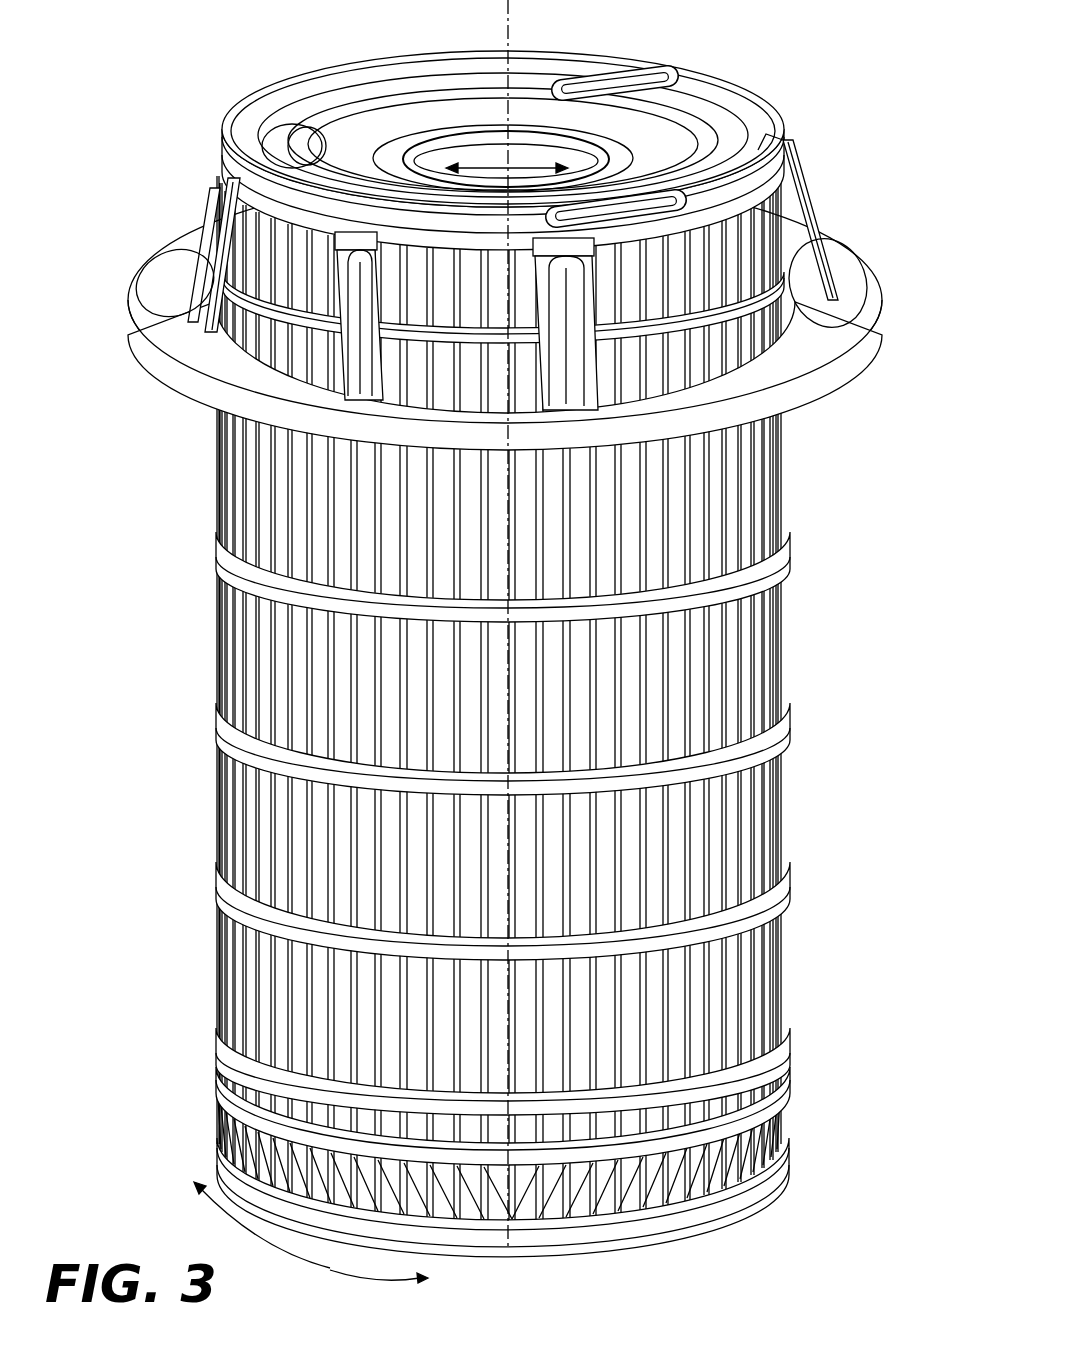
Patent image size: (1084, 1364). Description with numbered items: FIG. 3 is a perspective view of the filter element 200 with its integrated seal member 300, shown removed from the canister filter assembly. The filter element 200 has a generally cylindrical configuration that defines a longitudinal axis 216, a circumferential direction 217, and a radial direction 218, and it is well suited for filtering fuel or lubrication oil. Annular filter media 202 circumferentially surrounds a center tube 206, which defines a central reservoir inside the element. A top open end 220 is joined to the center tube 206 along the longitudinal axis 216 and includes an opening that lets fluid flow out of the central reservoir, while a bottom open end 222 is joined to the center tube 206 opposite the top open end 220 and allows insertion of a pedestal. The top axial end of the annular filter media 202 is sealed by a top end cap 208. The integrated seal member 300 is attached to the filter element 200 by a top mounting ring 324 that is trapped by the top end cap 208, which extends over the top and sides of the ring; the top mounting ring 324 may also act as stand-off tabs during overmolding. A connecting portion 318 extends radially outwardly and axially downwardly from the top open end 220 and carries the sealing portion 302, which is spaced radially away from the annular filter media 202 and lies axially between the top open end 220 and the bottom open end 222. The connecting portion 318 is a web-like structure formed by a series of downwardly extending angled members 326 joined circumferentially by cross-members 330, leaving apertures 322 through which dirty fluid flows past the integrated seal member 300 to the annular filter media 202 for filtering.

The filter element 200 is at (516, 647).
The annular filter media 202 is at (503, 735).
The center tube 206 is at (573, 165).
The top end cap 208 is at (742, 112).
The longitudinal axis 216 is at (508, 14).
The circumferential direction 217 is at (333, 1272).
The radial direction 218 is at (473, 162).
The top open end 220 is at (516, 150).
The bottom open end 222 is at (655, 1250).
The integrated seal member 300 is at (516, 277).
The sealing portion 302 is at (845, 396).
The connecting portion 318 is at (817, 178).
The apertures 322 is at (683, 290).
The top mounting ring 324 is at (283, 130).
The downwardly extending angled members 326 is at (820, 300).
The cross-members 330 is at (441, 340).